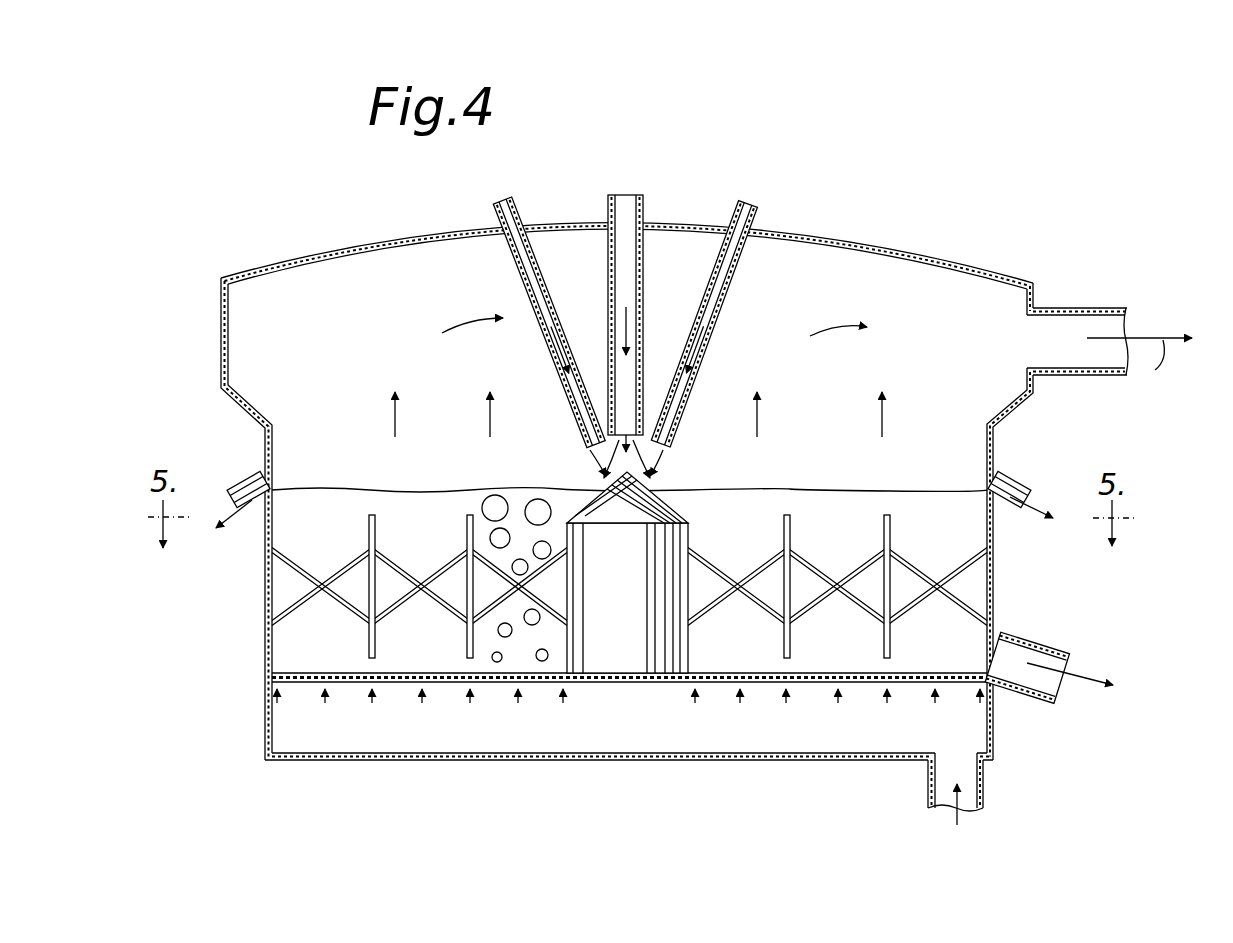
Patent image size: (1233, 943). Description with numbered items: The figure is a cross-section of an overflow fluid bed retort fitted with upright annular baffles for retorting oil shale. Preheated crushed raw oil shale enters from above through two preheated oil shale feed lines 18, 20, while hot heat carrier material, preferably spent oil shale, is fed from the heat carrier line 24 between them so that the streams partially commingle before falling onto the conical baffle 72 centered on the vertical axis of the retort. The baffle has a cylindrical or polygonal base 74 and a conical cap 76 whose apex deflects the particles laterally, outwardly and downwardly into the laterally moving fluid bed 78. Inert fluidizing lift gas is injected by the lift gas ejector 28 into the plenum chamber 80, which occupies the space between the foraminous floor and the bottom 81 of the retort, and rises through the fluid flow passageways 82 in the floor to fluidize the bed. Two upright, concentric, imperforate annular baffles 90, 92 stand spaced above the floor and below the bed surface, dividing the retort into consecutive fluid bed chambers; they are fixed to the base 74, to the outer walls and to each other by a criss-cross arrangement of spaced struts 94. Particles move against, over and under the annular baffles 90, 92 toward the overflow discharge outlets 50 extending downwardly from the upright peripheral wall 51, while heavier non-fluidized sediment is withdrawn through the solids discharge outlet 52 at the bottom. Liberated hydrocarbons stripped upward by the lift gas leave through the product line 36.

The preheated oil shale feed line 18 is at (493, 209).
The preheated oil shale feed line 20 is at (760, 212).
The heat carrier line 24 is at (643, 206).
The lift gas ejector 28 is at (928, 788).
The product line 36 is at (1085, 308).
The overflow discharge outlets 50 is at (255, 505).
The upright peripheral wall 51 is at (221, 332).
The solids discharge outlet 52 is at (1033, 640).
The conical baffle 72 is at (661, 587).
The base 74 is at (688, 640).
The conical cap 76 is at (663, 512).
The laterally moving fluid bed 78 is at (820, 490).
The plenum chamber 80 is at (645, 720).
The bottom 81 is at (628, 762).
The fluid flow passageways 82 is at (782, 682).
The annular baffle 90 is at (792, 525).
The annular baffle 92 is at (892, 525).
The struts 94 is at (852, 605).